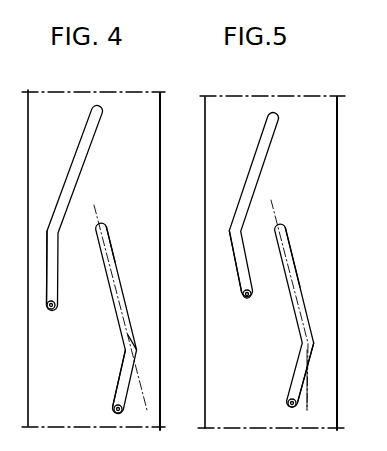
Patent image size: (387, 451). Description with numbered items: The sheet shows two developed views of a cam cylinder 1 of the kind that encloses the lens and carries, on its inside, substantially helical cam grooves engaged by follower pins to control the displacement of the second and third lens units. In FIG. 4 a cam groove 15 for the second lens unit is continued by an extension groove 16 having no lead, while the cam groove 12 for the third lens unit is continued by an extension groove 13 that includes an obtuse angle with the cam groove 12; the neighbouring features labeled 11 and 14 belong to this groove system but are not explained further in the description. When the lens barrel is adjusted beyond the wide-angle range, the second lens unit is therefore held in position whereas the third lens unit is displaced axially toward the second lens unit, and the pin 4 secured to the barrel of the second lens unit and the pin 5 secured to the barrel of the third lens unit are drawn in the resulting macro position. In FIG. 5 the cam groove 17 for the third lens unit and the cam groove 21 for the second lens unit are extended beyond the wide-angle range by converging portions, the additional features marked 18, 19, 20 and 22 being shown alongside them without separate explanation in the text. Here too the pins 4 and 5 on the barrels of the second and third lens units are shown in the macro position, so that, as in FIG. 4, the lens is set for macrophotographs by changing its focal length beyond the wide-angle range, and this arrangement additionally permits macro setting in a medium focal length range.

In FIG. 4, the cam cylinder 1 is at (27, 133).
In FIG. 5, the cam cylinder 1 is at (204, 133).
In FIG. 4, the pin 4 is at (47, 304).
In FIG. 5, the pin 4 is at (243, 295).
In FIG. 4, the pin 5 is at (122, 410).
In FIG. 5, the pin 5 is at (296, 404).
In FIG. 4, the lower lever (FIG. 4) 11 is at (124, 282).
In FIG. 4, the cam groove 12 is at (110, 245).
In FIG. 4, the extension groove 13 is at (130, 382).
In FIG. 4, the bend of lower lever 14 is at (128, 325).
In FIG. 4, the cam groove 15 is at (66, 168).
In FIG. 4, the extension groove 16 is at (49, 252).
In FIG. 5, the cam groove 17 is at (304, 288).
In FIG. 5, the upper portion of lower lever (FIG. 5) 18 is at (292, 265).
In FIG. 5, the lower end portion of lower lever (FIG. 5) 19 is at (312, 360).
In FIG. 5, the extension line of lower lever (FIG. 5) 20 is at (308, 383).
In FIG. 5, the cam groove 21 is at (236, 186).
In FIG. 5, the lower portion of upper lever (FIG. 5) 22 is at (235, 263).